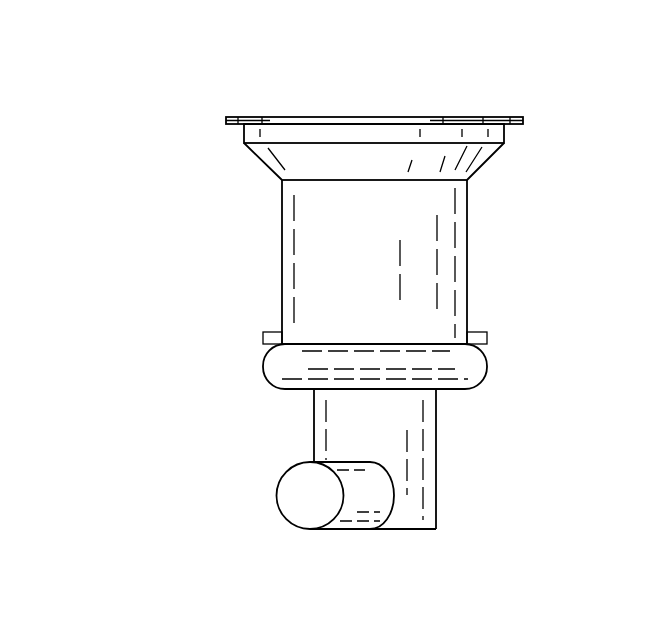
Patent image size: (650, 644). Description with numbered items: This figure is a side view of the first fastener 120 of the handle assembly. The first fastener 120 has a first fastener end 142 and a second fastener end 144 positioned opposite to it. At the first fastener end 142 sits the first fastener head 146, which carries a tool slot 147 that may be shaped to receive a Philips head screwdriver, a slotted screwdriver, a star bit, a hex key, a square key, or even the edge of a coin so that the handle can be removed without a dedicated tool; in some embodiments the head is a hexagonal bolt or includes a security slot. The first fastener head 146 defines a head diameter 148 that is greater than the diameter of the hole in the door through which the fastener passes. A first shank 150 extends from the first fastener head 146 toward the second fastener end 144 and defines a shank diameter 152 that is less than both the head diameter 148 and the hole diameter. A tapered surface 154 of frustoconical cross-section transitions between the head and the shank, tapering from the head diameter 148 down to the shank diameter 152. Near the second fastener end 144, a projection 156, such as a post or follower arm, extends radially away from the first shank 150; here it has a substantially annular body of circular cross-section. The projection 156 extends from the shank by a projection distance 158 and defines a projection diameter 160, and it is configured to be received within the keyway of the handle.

The first fastener 120 is at (160, 172).
The first fastener end 142 is at (540, 110).
The second fastener end 144 is at (475, 525).
The first fastener head 146 is at (505, 133).
The tool slot 147 is at (312, 118).
The head diameter 148 is at (523, 105).
The first shank 150 is at (467, 280).
The shank diameter 152 is at (467, 180).
The tapered surface 154 is at (485, 162).
The projection 156 is at (330, 462).
The projection distance 158 is at (312, 542).
The projection diameter 160 is at (287, 529).